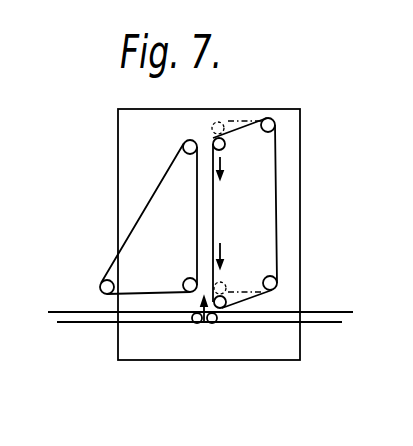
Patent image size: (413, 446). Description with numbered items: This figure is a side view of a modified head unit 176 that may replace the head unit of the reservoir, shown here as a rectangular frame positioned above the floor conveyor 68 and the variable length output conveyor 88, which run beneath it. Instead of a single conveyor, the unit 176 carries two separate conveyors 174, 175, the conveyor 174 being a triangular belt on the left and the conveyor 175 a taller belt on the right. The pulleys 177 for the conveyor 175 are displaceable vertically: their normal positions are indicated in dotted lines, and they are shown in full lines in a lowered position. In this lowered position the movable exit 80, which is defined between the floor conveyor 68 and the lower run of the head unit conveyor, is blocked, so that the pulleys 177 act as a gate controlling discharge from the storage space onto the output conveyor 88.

The conveyor 174 is at (143, 203).
The conveyor 175 is at (279, 192).
The modified head unit 176 is at (300, 135).
The pulleys 177 is at (228, 138).
The movable exit 80 is at (203, 300).
The floor conveyor 68 is at (80, 312).
The variable length output conveyor 88 is at (333, 312).